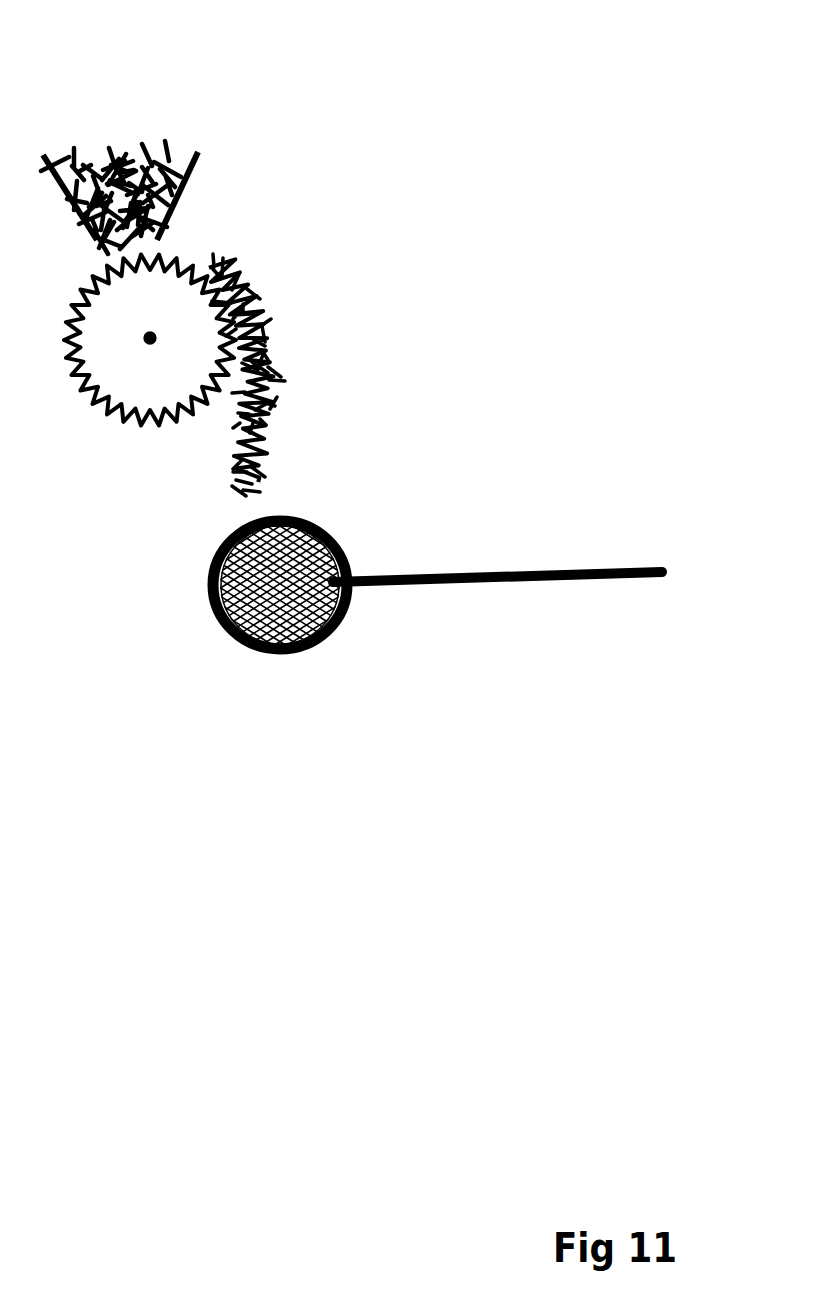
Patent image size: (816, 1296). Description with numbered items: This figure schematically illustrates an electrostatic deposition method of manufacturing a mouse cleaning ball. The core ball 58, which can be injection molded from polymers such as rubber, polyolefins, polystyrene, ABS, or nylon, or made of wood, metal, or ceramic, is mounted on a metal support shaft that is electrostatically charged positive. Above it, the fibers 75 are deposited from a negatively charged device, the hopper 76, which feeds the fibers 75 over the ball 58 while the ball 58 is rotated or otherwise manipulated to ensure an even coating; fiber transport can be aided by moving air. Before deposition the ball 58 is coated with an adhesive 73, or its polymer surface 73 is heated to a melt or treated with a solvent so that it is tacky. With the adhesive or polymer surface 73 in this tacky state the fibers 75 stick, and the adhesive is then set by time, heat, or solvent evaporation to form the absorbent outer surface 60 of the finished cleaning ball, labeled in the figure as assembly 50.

The fibers 75 is at (126, 143).
The hopper 76 is at (178, 198).
The absorbent outer surface 60 is at (297, 513).
The adhesive 73 is at (310, 520).
The ball 58 is at (333, 533).
The applicator assembly 50 is at (391, 576).